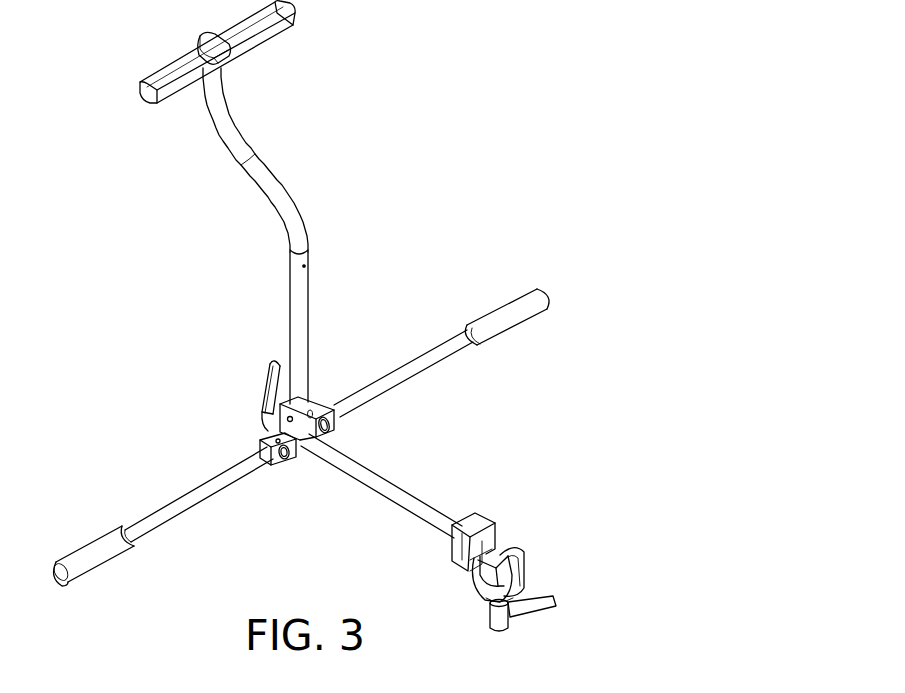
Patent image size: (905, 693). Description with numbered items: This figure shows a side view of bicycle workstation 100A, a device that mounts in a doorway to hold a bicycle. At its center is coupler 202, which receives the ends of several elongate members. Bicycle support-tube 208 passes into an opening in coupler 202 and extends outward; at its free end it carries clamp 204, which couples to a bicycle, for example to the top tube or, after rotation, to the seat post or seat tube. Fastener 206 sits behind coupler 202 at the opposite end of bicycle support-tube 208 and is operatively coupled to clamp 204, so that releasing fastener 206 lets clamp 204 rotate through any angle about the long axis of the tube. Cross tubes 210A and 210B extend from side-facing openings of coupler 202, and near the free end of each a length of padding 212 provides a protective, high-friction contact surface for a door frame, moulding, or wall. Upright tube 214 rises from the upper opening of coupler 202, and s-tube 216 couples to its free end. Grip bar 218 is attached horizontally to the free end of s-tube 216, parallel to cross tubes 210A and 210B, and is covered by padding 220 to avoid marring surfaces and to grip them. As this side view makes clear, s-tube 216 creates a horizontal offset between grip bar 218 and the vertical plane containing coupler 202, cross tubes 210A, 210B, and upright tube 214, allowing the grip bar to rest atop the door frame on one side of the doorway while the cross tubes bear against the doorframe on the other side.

The bicycle workstation 100A is at (432, 168).
The coupler 202 is at (299, 478).
The clamp 204 is at (536, 555).
The fastener 206 is at (253, 388).
The bicycle support-tube 208 is at (400, 492).
The cross tube 210A is at (165, 507).
The cross tube 210B is at (420, 358).
The padding 212 is at (503, 302).
The upright tube 214 is at (303, 321).
The s-tube 216 is at (238, 142).
The grip bar 218 is at (165, 40).
The padding 220 is at (276, 32).